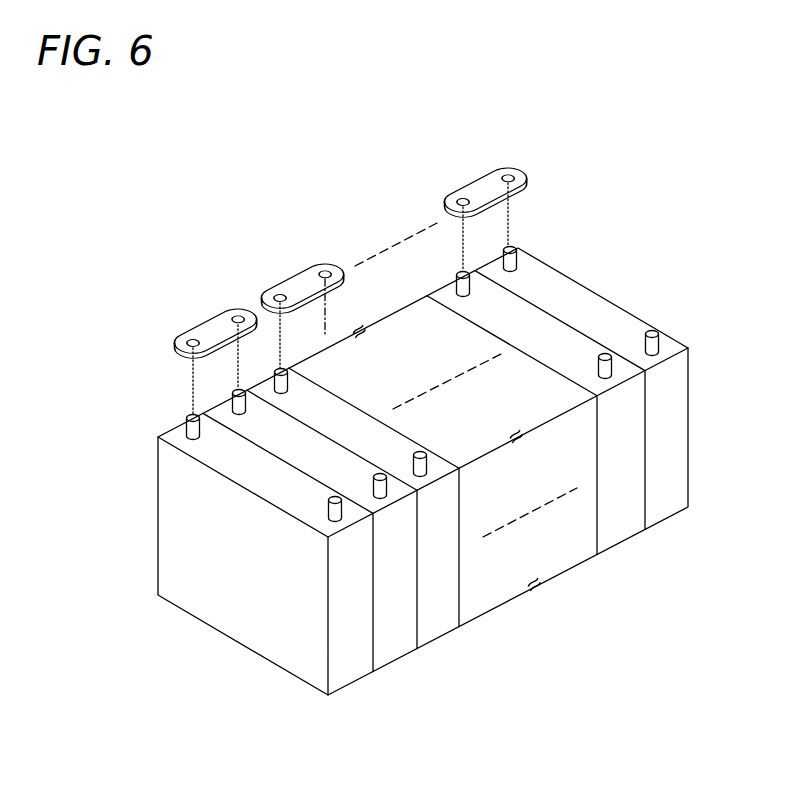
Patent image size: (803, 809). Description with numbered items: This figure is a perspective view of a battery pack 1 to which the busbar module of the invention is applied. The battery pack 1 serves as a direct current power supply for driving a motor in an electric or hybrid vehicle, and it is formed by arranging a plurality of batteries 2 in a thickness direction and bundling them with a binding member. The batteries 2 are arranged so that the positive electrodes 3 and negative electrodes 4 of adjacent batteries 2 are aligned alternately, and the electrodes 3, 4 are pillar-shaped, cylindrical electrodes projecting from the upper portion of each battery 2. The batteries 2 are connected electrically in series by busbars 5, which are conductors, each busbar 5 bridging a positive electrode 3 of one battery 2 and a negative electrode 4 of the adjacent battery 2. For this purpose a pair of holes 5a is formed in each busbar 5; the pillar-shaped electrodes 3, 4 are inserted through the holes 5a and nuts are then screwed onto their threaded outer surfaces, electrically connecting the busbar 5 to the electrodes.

The battery pack 1 is at (638, 272).
The battery 2 is at (349, 678).
The positive electrode 3 is at (238, 416).
The negative electrode 4 is at (188, 440).
The busbar 5 is at (331, 264).
The hole 5a is at (240, 313).